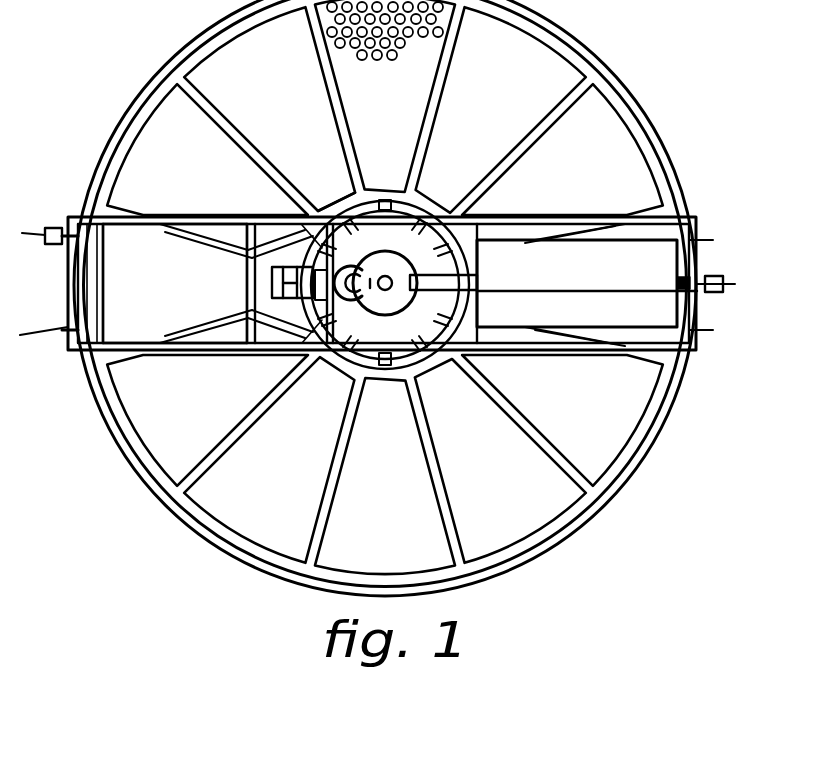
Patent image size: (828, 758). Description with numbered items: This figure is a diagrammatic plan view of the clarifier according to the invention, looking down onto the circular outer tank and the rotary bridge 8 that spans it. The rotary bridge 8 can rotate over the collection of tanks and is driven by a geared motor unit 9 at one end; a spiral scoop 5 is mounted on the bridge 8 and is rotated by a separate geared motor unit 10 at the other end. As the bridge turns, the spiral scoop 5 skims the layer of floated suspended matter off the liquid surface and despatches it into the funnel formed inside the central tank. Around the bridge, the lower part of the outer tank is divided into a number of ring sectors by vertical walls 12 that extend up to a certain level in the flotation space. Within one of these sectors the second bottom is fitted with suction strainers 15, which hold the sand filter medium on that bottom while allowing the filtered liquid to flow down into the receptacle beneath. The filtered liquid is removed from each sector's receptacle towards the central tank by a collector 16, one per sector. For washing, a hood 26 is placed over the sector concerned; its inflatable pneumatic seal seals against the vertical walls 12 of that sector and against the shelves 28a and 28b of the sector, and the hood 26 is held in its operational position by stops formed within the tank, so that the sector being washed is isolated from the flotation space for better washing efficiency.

The spiral scoop 5 is at (612, 245).
The rotary bridge 8 is at (492, 220).
The geared motor unit 9 is at (65, 222).
The geared motor unit 10 is at (722, 262).
The vertical walls 12 is at (438, 466).
The suction strainers 15 is at (374, 54).
The collector 16 is at (455, 216).
The hood 26 is at (168, 325).
The shelf 28a is at (346, 202).
The shelf 28b is at (235, 22).